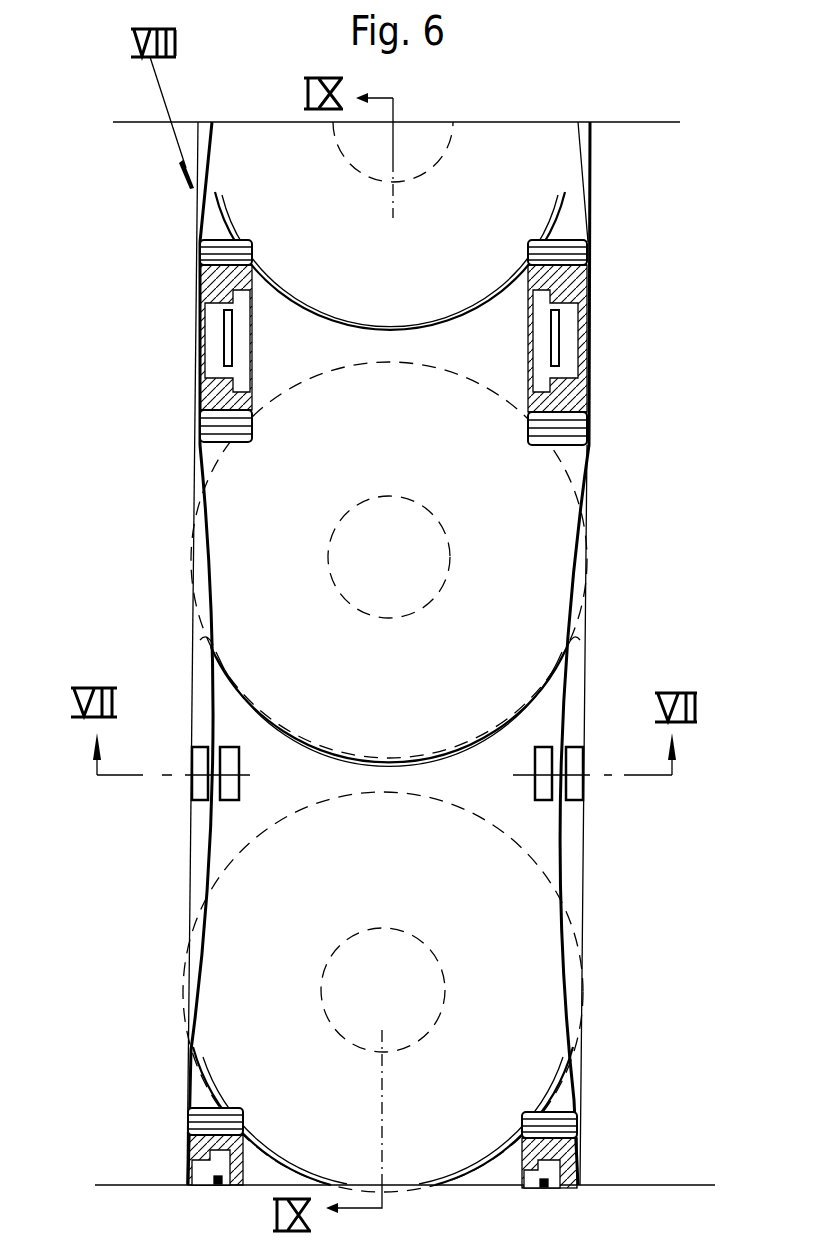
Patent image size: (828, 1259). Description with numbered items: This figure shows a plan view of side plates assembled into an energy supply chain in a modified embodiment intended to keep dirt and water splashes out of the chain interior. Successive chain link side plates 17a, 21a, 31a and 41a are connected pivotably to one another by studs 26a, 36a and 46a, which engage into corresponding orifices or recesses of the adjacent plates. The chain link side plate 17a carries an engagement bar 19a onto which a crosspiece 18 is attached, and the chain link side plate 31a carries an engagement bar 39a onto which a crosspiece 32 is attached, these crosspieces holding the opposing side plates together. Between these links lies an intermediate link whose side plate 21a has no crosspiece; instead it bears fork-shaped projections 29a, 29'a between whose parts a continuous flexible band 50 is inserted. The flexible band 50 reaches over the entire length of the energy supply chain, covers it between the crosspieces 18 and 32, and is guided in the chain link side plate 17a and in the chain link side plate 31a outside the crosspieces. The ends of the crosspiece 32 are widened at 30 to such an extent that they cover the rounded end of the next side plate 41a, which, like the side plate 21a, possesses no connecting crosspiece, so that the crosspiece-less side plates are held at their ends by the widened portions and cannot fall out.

The chain link side plate 17a is at (577, 1163).
The crosspiece 18 is at (578, 1107).
The engagement bar 19a is at (577, 1133).
The side plate 21a is at (280, 612).
The stud 26a is at (410, 975).
The fork-shaped projection 29a is at (200, 790).
The fork-shaped projection 29'a is at (358, 817).
The widened end of crosspiece 30 is at (580, 262).
The chain link side plate 31a is at (280, 210).
The crosspiece 32 is at (218, 283).
The stud 36a is at (360, 548).
The engagement bar 39a is at (567, 327).
The side plate 41a is at (515, 157).
The stud 46a is at (418, 147).
The flexible band 50 is at (207, 873).